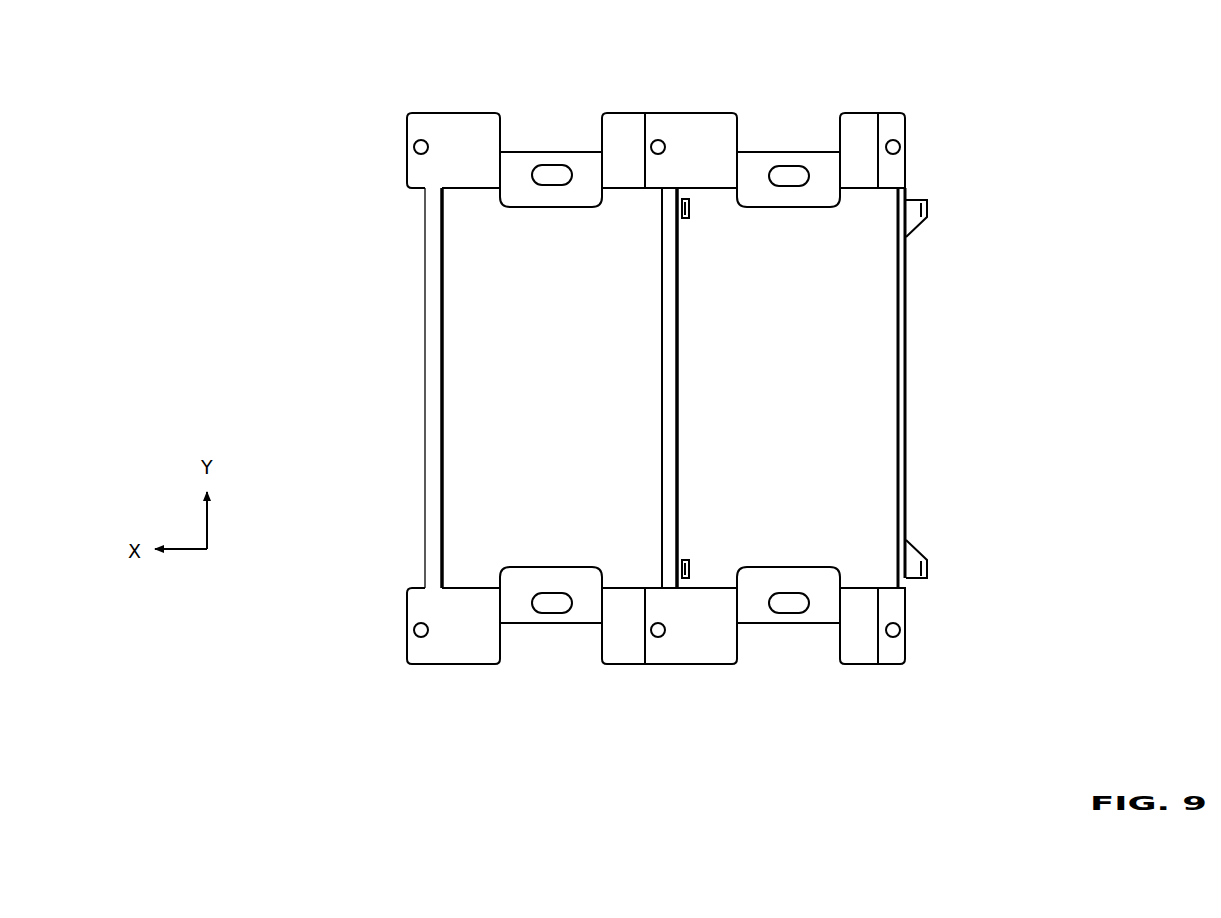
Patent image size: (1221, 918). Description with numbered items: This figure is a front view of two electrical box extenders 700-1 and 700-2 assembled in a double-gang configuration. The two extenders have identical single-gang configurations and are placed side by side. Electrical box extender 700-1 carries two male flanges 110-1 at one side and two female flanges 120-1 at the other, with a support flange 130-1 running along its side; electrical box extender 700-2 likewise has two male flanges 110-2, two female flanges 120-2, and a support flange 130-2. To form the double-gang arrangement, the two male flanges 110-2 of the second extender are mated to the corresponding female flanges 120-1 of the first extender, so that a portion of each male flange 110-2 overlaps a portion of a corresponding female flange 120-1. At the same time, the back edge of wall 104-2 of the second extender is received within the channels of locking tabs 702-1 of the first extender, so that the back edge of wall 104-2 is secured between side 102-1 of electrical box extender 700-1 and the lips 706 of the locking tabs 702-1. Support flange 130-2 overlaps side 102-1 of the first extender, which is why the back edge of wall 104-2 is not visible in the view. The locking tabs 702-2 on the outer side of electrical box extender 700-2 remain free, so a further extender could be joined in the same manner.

The electrical box extender 700-1 is at (453, 387).
The electrical box extender 700-2 is at (858, 387).
The side 102-1 is at (648, 316).
The wall 104-2 is at (690, 418).
The male flange 110-1 is at (629, 128).
The male flange 110-2 is at (867, 128).
The female flange 120-1 is at (466, 122).
The female flange 120-2 is at (706, 122).
The support flange 130-1 is at (432, 352).
The support flange 130-2 is at (668, 386).
The locking tab 702-1 is at (706, 210).
The locking tab 702-2 is at (942, 210).
The lip 706 is at (692, 222).